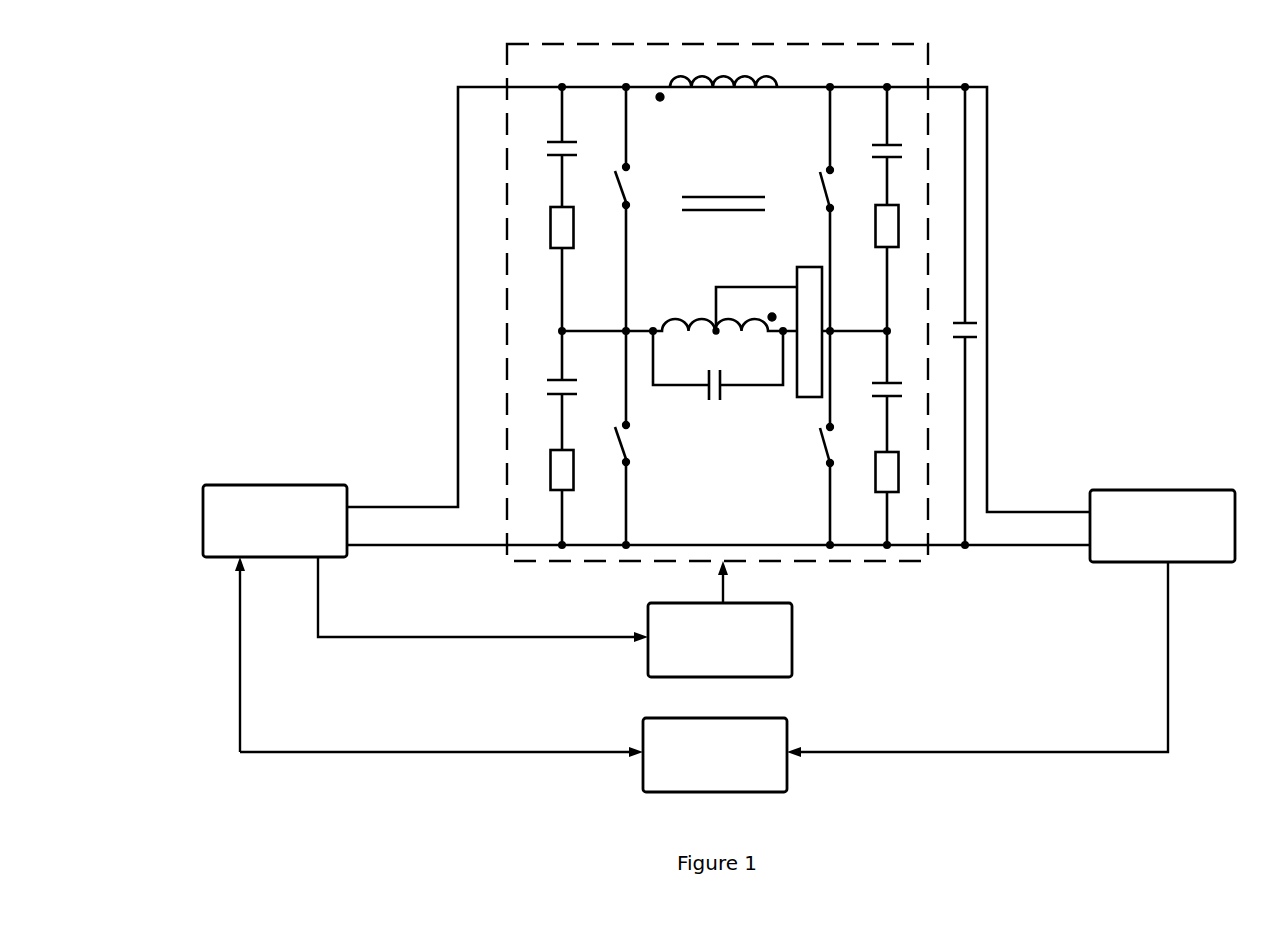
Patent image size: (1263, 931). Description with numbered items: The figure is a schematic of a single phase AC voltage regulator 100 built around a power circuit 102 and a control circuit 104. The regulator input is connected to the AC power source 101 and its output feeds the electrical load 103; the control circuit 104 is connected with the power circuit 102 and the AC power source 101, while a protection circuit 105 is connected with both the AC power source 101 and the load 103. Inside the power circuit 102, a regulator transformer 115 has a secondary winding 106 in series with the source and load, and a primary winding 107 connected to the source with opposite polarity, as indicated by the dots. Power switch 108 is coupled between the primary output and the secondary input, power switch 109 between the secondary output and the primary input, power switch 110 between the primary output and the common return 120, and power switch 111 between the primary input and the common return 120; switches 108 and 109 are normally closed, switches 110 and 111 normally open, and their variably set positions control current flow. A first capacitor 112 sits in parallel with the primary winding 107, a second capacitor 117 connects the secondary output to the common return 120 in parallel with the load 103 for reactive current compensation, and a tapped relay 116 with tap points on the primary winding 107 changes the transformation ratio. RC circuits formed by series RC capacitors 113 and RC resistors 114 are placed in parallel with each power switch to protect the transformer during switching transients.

The voltage regulator 100 is at (1162, 33).
The AC power source 101 is at (275, 521).
The power circuit 102 is at (947, 36).
The electrical load 103 is at (1162, 526).
The control circuit 104 is at (720, 640).
The protection circuit 105 is at (715, 755).
The secondary winding 106 is at (733, 72).
The primary winding 107 is at (682, 315).
The power switch 108 is at (630, 183).
The power switch 109 is at (817, 197).
The power switch 110 is at (635, 440).
The power switch 111 is at (818, 440).
The first capacitor 112 is at (700, 395).
The RC capacitor 113 is at (585, 145).
The RC resistor 114 is at (580, 233).
The regulator transformer 115 is at (710, 188).
The tapped relay 116 is at (787, 273).
The second capacitor 117 is at (953, 317).
The common return 120 is at (353, 547).